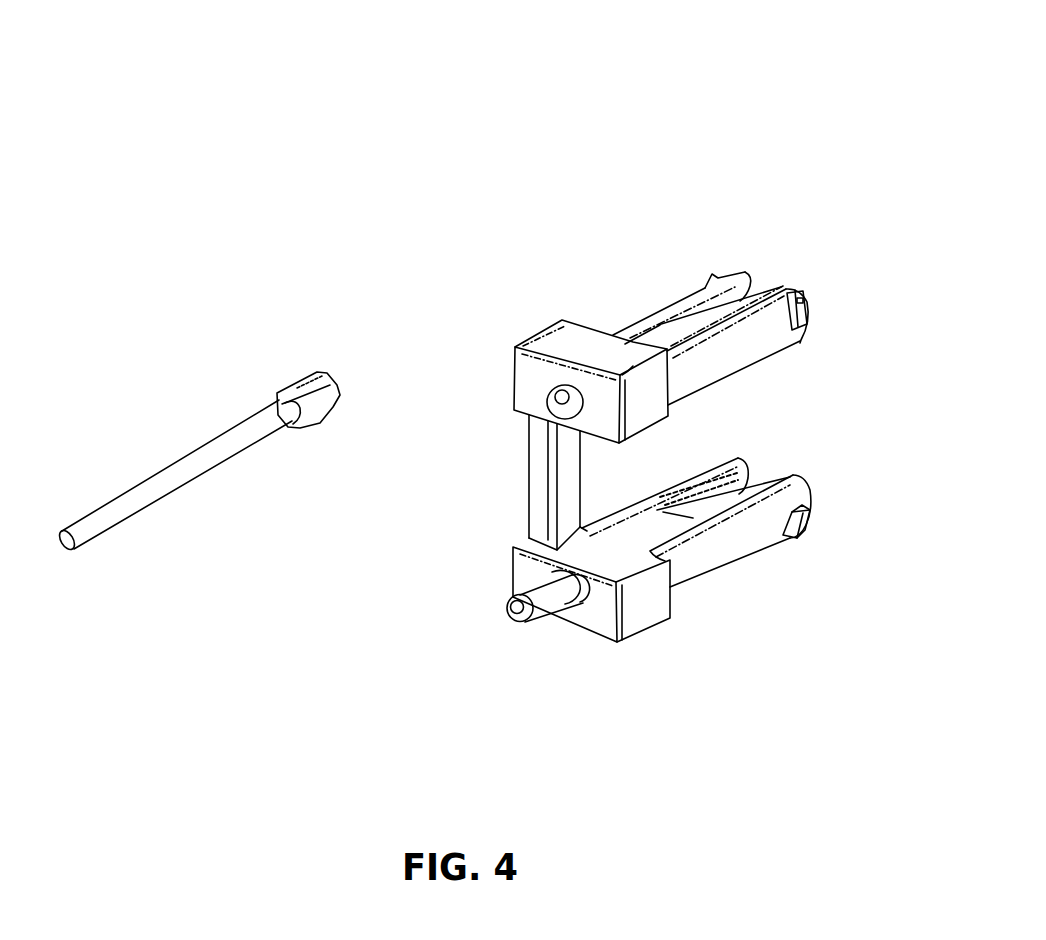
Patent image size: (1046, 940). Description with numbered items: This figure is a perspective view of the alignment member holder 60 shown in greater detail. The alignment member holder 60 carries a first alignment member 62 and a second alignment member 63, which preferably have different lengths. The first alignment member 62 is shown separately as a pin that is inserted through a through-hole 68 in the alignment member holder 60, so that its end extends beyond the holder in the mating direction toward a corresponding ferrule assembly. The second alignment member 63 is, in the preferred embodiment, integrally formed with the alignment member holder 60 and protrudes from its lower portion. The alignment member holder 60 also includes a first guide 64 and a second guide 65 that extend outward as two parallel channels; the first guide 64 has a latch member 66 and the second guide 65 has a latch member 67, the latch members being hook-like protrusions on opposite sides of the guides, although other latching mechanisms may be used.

The alignment member holder 60 is at (681, 378).
The first alignment member 62 is at (187, 463).
The second alignment member 63 is at (550, 615).
The first guide 64 is at (776, 337).
The second guide 65 is at (763, 570).
The latch member 66 is at (810, 302).
The latch member 67 is at (808, 517).
The through-hole 68 is at (557, 401).